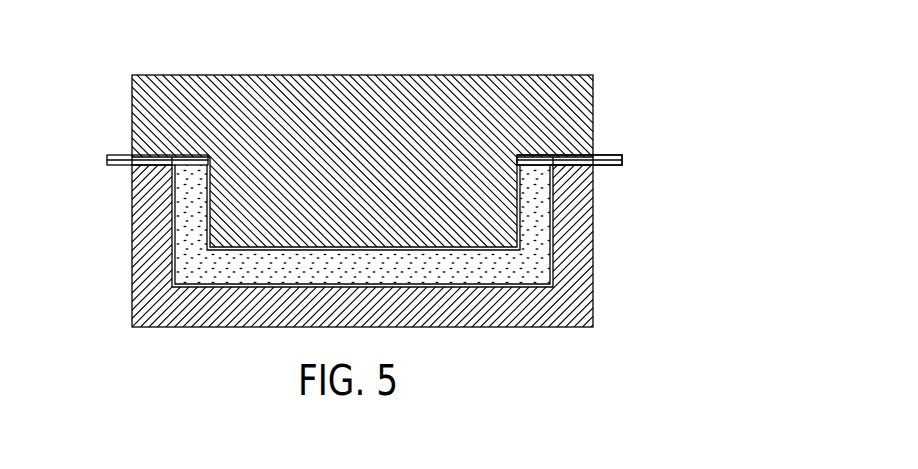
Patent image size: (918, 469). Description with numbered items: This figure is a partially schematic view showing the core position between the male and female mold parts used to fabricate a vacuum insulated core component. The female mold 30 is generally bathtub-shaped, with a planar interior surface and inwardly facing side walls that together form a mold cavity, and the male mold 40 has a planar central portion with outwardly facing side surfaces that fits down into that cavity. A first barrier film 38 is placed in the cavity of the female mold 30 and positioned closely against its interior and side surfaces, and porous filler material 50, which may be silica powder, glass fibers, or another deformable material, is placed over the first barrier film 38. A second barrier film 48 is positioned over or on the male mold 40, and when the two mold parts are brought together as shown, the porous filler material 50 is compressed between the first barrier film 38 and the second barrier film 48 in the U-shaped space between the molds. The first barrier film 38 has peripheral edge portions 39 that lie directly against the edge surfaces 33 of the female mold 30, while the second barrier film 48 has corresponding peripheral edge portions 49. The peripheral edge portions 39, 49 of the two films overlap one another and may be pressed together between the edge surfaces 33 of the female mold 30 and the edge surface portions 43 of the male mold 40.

The female mold 30 is at (600, 271).
The male mold 40 is at (602, 98).
The edge surfaces 33 is at (152, 154).
The second barrier film 48 is at (560, 160).
The porous filler material 50 is at (248, 272).
The peripheral edge portions 39 is at (605, 155).
The peripheral edge portions 49 is at (603, 165).
The first barrier film 38 is at (600, 167).
The edge surface portions 43 is at (155, 166).